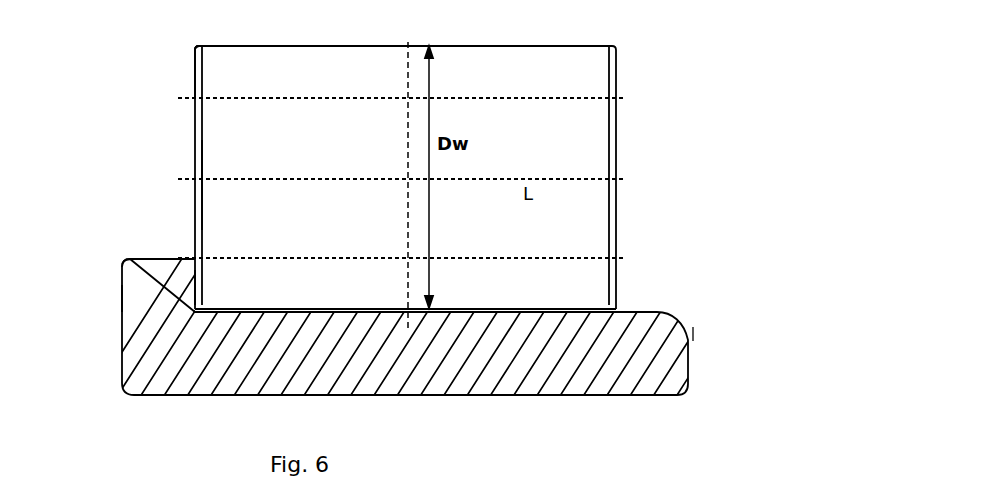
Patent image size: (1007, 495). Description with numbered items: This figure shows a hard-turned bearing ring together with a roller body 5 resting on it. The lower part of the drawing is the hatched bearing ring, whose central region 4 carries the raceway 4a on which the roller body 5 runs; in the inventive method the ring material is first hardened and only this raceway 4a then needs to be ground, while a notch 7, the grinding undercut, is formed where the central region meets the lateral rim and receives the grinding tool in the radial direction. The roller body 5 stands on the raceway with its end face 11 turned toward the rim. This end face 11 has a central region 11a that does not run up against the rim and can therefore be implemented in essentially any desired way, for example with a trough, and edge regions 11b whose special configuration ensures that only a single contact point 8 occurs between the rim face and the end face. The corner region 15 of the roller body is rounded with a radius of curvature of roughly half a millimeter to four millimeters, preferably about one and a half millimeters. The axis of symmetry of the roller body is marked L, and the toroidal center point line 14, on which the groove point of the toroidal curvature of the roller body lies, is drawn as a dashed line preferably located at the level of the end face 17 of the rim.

The central region 4 is at (260, 360).
The raceway 4a is at (333, 309).
The roller body 5 is at (248, 153).
The notch 7 is at (190, 315).
The contact point 8 is at (190, 283).
The end face 11 is at (178, 160).
The central region of the end face 11a is at (195, 194).
The edge regions of the end face 11b is at (195, 77).
The toroidal center point line 14 is at (532, 98).
The corner region 15 is at (195, 48).
The end face of the rim 17 is at (160, 259).